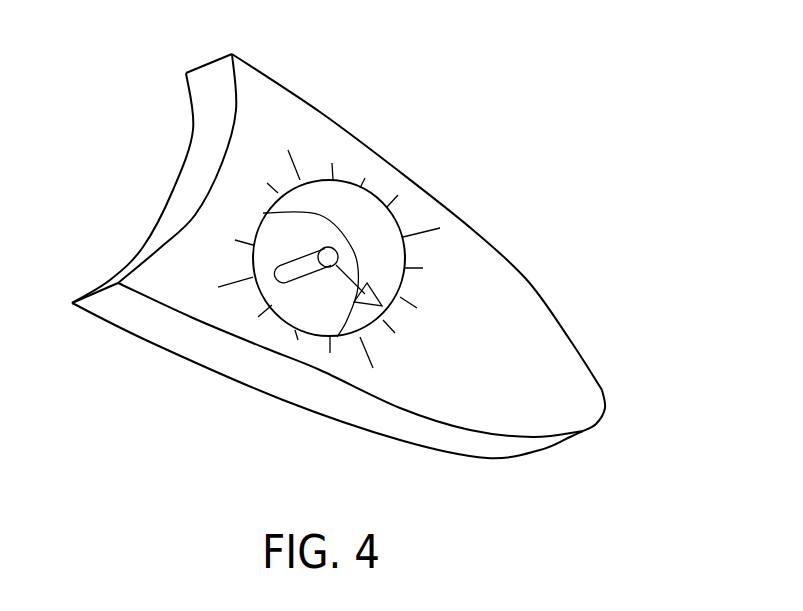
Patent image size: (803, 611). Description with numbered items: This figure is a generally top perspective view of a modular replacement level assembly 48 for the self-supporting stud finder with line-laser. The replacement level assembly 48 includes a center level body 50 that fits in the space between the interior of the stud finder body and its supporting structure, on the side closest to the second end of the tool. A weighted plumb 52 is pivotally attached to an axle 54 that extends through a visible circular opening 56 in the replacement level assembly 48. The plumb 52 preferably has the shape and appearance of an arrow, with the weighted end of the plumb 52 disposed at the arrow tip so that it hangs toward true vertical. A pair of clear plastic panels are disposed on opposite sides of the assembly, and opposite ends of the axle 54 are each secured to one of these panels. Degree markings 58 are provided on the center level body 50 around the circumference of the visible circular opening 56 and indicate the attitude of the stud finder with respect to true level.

The replacement level assembly 48 is at (371, 277).
The center level body 50 is at (525, 378).
The weighted plumb 52 is at (377, 307).
The axle 54 is at (328, 249).
The visible circular opening 56 is at (385, 258).
The degree markings 58 is at (387, 158).